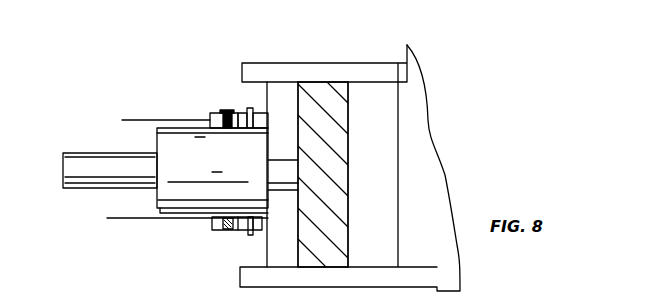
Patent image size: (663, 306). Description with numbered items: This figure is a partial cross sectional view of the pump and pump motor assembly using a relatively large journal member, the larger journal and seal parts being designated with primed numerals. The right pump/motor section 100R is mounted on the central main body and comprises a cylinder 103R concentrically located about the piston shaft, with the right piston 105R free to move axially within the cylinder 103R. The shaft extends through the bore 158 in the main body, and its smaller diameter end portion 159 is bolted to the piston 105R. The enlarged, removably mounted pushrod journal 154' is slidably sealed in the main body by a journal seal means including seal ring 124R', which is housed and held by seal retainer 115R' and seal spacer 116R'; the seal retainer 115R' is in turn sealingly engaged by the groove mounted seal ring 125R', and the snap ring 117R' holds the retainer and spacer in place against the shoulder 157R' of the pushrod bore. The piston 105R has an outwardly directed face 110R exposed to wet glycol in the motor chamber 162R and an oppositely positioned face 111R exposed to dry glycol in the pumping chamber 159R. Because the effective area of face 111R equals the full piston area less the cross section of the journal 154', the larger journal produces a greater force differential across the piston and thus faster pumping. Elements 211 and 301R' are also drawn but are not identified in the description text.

The support member 100R is at (327, 62).
The flange 103R is at (341, 71).
The body portion 105R is at (334, 179).
The wall 110R is at (348, 137).
The bore 111R is at (302, 206).
The nut 115R' is at (180, 97).
The lower nut 116R' is at (204, 252).
The lower bolt 117R' is at (205, 241).
The bolt 124R' is at (231, 82).
The bolt head 125R' is at (185, 86).
The shaft 154' is at (99, 203).
The housing 157R' is at (163, 210).
The plate 158 is at (158, 220).
The column member 159 is at (284, 160).
The column wall 159R is at (269, 250).
The outer body 162R is at (382, 100).
The opening 211 is at (297, 250).
The plate 301R' is at (166, 116).